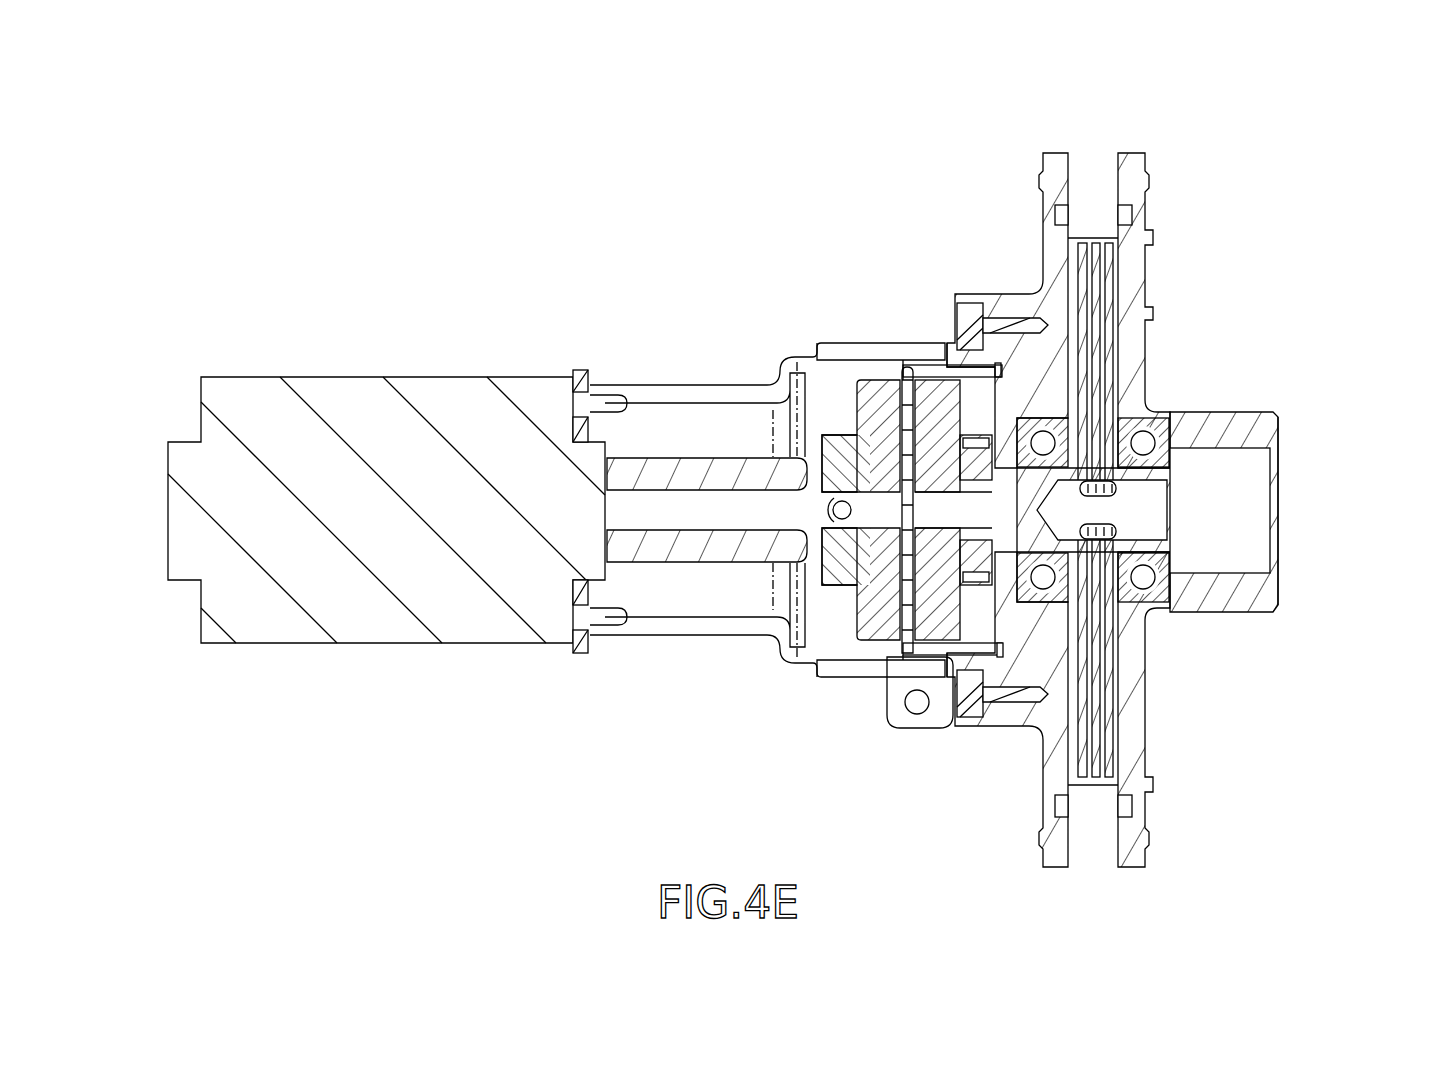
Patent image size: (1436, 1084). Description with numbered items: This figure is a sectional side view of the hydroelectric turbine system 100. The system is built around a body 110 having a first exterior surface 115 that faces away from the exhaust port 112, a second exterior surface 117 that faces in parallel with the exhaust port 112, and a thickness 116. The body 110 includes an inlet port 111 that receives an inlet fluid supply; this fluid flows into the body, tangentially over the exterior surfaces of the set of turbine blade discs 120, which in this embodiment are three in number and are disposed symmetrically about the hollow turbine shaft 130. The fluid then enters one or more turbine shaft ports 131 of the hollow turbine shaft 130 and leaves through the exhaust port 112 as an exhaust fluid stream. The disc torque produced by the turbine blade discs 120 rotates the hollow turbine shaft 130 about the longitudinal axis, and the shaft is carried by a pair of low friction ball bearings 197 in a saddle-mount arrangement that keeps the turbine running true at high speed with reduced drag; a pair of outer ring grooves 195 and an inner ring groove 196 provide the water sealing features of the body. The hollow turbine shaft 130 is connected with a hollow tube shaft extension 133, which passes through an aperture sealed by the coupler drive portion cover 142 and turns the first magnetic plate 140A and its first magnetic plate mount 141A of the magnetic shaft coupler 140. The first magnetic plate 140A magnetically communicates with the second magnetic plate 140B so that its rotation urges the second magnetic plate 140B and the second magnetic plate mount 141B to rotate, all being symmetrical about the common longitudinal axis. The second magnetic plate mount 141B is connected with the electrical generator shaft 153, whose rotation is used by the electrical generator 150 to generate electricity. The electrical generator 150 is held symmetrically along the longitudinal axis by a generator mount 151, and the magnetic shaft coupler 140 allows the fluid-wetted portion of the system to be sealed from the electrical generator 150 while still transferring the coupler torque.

The hydroelectric turbine system 100 is at (756, 158).
The body 110 is at (1105, 499).
The inlet port 111 is at (1097, 145).
The exhaust port 112 is at (1285, 543).
The first exterior surface 115 is at (1043, 243).
The thickness 116 is at (1100, 850).
The second exterior surface 117 is at (1150, 210).
The set of turbine blade discs 120 is at (1132, 305).
The hollow turbine shaft 130 is at (1212, 491).
The turbine shaft ports 131 is at (1120, 527).
The hollow tube shaft extension 133 is at (968, 505).
The magnetic shaft coupler 140 is at (883, 505).
The first magnetic plate 140A is at (935, 410).
The second magnetic plate 140B is at (878, 440).
The first magnetic plate mount 141A is at (980, 435).
The second magnetic plate mount 141B is at (862, 440).
The coupler drive portion cover 142 is at (905, 655).
The electrical generator 150 is at (326, 648).
The generator mount 151 is at (655, 638).
The electrical generator shaft 153 is at (783, 513).
The outer ring grooves 195 is at (1055, 212).
The inner ring groove 196 is at (1003, 650).
The low friction ball bearings 197 is at (1160, 418).